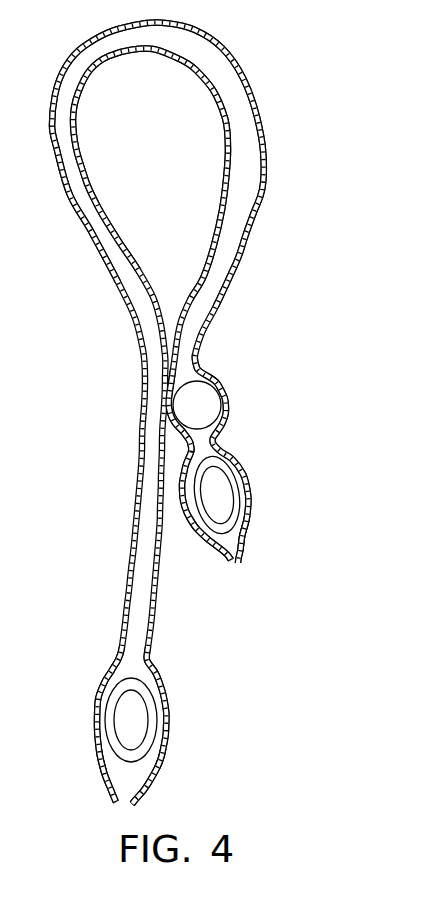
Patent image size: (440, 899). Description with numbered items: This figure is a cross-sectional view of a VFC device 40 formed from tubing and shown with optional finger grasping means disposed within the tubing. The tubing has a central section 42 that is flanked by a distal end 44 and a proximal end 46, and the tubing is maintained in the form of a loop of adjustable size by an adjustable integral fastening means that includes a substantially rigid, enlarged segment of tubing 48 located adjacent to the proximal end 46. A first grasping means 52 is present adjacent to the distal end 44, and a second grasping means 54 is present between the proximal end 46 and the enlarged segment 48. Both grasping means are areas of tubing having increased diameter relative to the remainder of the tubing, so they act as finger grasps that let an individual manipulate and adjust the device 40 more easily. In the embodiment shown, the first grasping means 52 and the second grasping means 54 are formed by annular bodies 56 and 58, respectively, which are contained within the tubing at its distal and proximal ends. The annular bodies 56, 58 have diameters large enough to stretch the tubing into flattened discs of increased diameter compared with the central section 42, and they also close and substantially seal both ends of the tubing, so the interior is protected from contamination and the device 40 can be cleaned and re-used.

The VFC device 40 is at (300, 198).
The central section 42 is at (210, 70).
The distal end 44 is at (125, 802).
The proximal end 46 is at (234, 560).
The enlarged segment of tubing 48 is at (238, 379).
The first grasping means 52 is at (75, 711).
The second grasping means 54 is at (262, 465).
The annular body 56 is at (147, 718).
The annular body 58 is at (232, 525).